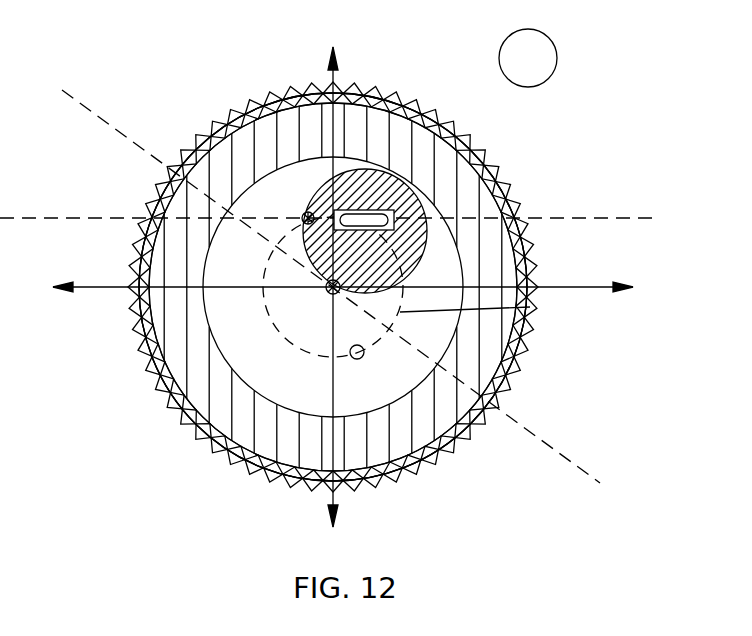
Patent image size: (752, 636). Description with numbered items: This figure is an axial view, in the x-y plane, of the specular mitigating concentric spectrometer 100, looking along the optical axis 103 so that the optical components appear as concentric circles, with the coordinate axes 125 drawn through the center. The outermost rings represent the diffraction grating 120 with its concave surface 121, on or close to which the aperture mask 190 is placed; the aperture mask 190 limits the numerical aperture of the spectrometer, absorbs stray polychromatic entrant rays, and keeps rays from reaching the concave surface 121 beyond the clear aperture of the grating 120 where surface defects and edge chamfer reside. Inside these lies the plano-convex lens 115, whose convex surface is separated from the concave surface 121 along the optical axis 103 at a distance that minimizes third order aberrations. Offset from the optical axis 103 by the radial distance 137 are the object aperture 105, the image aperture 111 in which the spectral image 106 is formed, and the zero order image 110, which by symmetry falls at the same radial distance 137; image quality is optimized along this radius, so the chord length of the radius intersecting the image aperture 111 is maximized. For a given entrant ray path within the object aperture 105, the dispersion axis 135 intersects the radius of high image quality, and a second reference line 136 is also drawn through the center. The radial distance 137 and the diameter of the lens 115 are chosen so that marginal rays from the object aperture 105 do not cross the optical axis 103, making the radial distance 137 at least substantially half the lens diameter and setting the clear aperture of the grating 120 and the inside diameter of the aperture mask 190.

The specular mitigating concentric spectrometer 100 is at (528, 58).
The optical axis 103 is at (312, 289).
The object aperture 105 is at (361, 357).
The spectral image 106 is at (378, 210).
The zero order image 110 is at (278, 108).
The image aperture 111 is at (350, 214).
The plano-convex lens 115 is at (207, 433).
The diffraction grating 120 is at (506, 203).
The concave surface 121 is at (463, 137).
The x axis 125 is at (112, 288).
The dispersion axis 135 is at (571, 218).
The reference line 136 is at (580, 467).
The radial distance 137 is at (530, 307).
The aperture mask 190 is at (458, 437).